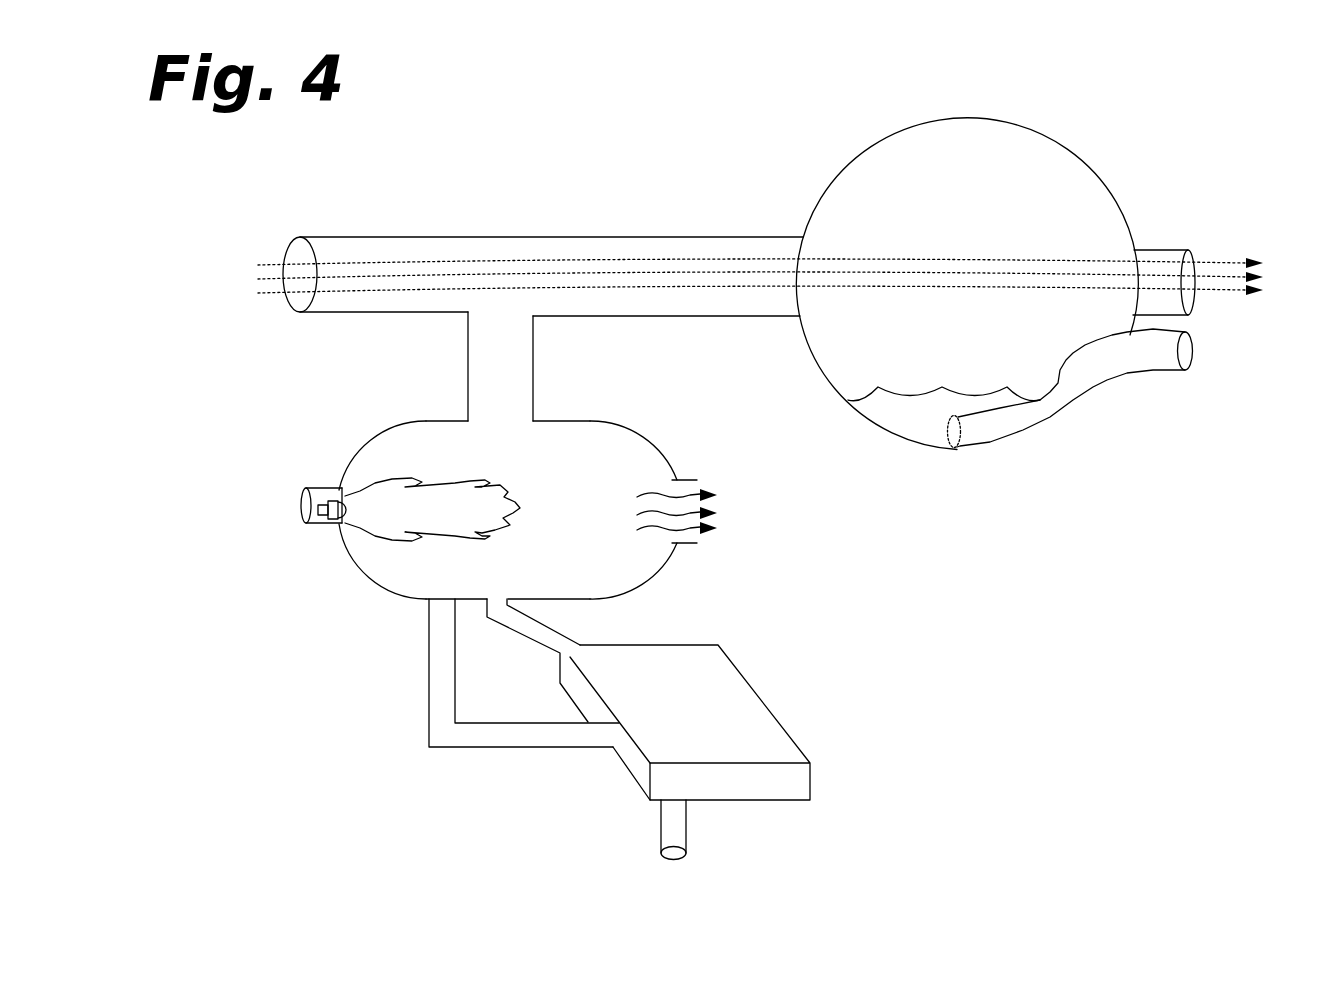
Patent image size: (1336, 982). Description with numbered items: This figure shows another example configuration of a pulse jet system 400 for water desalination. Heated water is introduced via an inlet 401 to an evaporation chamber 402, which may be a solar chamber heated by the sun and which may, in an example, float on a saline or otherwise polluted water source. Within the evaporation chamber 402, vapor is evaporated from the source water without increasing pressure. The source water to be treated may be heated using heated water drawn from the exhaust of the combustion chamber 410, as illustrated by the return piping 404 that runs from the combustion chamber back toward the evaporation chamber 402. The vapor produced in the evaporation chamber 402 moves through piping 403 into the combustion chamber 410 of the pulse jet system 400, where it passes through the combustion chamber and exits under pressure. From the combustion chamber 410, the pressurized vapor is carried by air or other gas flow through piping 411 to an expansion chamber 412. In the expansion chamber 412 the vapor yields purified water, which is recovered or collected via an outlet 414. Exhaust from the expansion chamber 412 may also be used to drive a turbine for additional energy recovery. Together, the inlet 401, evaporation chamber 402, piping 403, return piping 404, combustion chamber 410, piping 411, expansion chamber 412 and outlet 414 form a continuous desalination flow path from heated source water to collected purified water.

The pulse jet system 400 is at (628, 158).
The inlet 401 is at (688, 846).
The evaporation chamber 402 is at (747, 680).
The piping 403 is at (565, 638).
The return piping 404 is at (429, 703).
The combustion chamber 410 is at (387, 432).
The piping 411 is at (541, 236).
The expansion chamber 412 is at (1072, 155).
The outlet 414 is at (1187, 370).